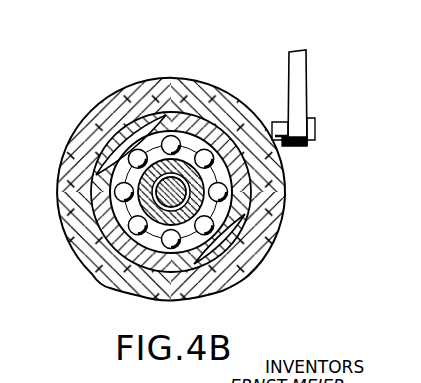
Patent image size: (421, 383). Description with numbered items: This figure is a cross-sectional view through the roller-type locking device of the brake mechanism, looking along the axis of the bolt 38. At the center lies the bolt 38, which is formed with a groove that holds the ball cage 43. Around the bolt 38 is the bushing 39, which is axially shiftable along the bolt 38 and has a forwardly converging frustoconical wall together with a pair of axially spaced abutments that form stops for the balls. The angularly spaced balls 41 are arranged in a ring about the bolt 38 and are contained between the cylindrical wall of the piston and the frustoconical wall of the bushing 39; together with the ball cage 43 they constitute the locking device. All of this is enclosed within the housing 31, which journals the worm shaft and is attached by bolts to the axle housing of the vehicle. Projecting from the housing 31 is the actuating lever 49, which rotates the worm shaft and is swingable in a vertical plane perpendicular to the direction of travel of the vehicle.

The housing 31 is at (136, 88).
The bolt 38 is at (252, 174).
The bushing 39 is at (132, 208).
The balls 41 is at (213, 140).
The ball cage 43 is at (285, 210).
The actuating lever 49 is at (302, 84).